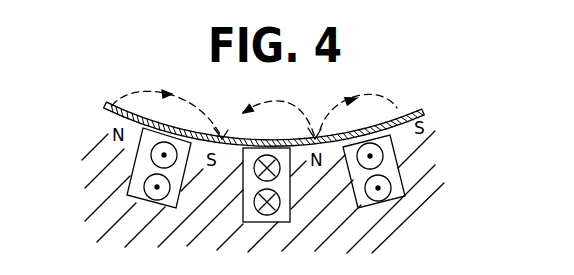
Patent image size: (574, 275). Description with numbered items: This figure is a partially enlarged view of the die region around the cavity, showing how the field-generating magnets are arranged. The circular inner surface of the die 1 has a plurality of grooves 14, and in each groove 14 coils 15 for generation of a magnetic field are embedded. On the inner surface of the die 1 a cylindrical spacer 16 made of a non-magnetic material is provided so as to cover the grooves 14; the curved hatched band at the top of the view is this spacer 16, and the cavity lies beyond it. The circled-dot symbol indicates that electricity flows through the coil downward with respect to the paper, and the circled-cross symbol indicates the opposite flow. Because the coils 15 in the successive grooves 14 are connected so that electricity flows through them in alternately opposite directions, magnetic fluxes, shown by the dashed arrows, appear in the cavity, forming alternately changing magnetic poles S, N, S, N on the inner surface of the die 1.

The die 1 is at (420, 163).
The groove 14 is at (395, 184).
The coil 15 is at (385, 199).
The cylindrical spacer 16 is at (396, 116).